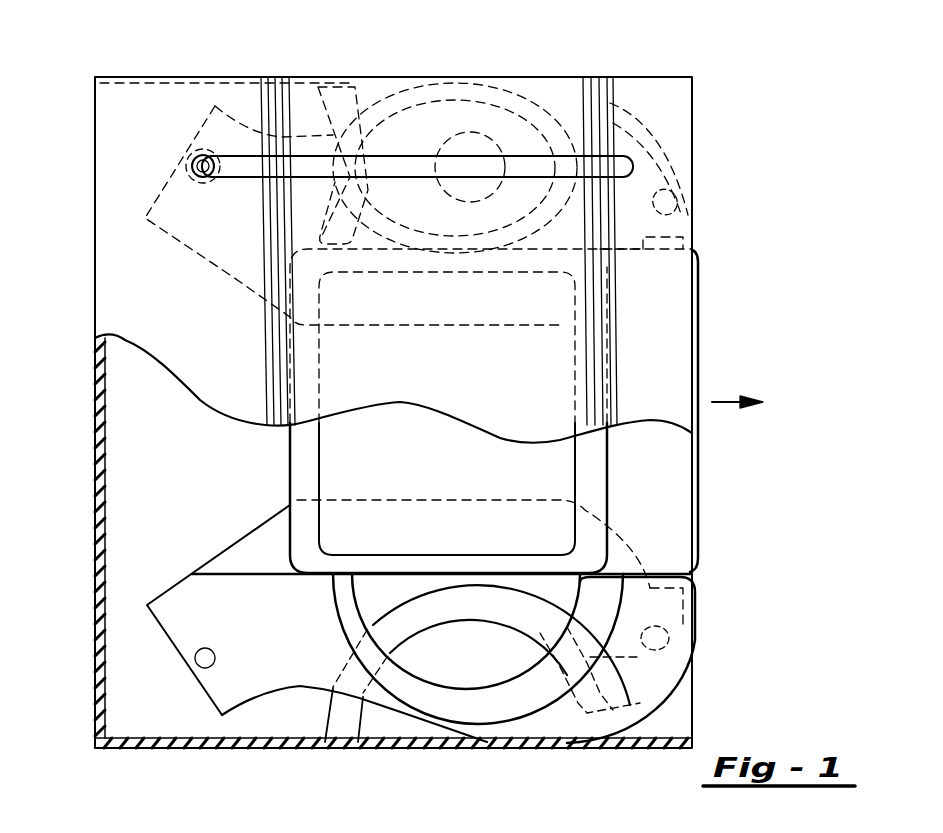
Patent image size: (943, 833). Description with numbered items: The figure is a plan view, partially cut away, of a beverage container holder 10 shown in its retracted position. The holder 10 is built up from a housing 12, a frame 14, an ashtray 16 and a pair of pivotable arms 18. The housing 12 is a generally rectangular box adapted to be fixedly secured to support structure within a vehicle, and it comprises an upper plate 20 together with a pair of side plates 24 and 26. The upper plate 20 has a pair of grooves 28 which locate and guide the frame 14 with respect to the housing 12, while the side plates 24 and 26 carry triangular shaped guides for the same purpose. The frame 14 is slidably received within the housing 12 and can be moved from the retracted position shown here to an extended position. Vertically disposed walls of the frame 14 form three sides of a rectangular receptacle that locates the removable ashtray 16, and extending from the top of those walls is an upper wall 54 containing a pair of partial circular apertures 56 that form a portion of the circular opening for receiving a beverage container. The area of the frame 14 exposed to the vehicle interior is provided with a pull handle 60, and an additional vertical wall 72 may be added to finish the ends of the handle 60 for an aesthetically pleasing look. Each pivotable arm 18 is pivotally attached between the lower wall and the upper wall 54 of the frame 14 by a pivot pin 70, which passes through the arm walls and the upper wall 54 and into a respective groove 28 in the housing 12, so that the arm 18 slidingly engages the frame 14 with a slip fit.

The beverage container holder 10 is at (718, 57).
The housing 12 is at (260, 747).
The frame 14 is at (153, 468).
The ashtray 16 is at (552, 468).
The pivotable arm 18 is at (660, 143).
The upper plate 20 is at (133, 258).
The side plate 24 is at (417, 747).
The side plate 26 is at (363, 76).
The groove 28 is at (471, 152).
The upper wall 54 is at (303, 708).
The partial circular aperture 56 is at (593, 167).
The pull handle 60 is at (685, 513).
The pivot pin 70 is at (192, 166).
The vertical wall 72 is at (690, 217).